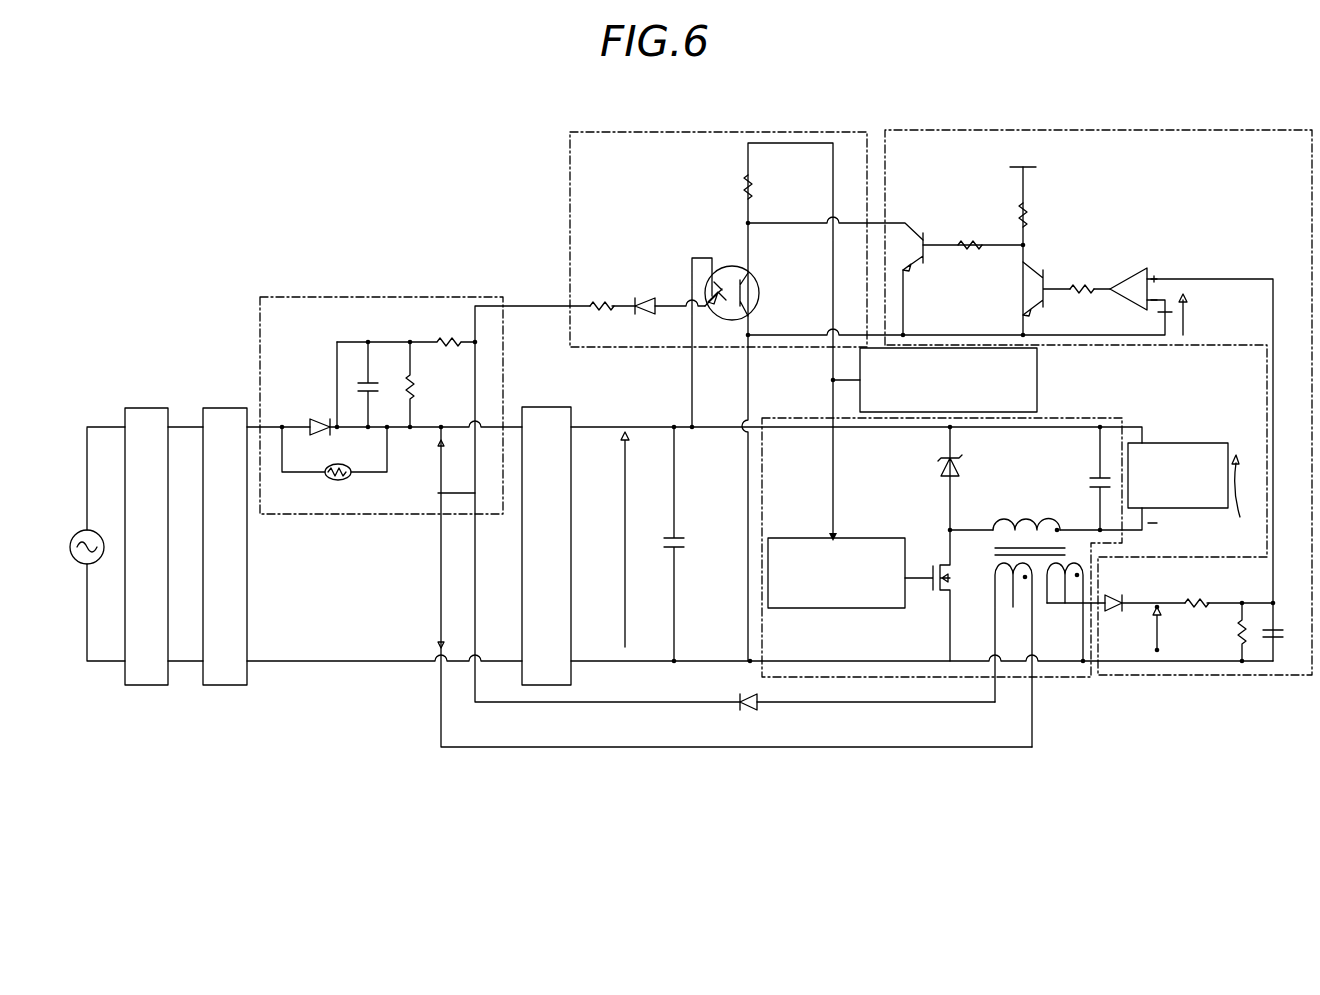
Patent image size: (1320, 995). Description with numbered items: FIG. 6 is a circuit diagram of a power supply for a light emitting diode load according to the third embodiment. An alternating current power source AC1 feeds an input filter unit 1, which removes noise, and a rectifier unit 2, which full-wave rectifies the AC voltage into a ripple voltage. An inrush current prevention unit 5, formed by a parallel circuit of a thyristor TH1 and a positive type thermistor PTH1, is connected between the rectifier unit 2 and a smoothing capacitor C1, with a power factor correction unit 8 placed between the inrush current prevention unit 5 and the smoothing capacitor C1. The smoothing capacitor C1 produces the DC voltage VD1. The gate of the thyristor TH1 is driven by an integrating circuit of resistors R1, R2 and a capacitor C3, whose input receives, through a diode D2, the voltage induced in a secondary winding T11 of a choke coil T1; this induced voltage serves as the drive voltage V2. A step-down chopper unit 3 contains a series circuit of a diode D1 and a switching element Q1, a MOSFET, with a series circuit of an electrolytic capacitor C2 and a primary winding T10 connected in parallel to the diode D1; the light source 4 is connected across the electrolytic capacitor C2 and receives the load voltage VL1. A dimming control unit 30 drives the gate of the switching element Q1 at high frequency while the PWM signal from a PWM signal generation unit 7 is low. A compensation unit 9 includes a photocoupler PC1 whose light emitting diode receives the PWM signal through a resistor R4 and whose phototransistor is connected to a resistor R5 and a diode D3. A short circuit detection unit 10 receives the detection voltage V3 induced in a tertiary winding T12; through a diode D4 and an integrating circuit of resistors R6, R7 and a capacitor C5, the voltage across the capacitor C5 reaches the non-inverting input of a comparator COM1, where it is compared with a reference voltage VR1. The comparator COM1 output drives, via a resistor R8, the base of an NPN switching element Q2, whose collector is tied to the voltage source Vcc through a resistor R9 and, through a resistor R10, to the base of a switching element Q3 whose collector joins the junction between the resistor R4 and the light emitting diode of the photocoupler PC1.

The input filter unit 1 is at (146, 406).
The rectifier unit 2 is at (225, 406).
The step-down chopper unit 3 is at (1085, 418).
The light source 4 is at (1229, 447).
The inrush current prevention unit 5 is at (447, 297).
The PWM signal generation unit 7 is at (1040, 364).
The power factor correction (PFC) unit 8 is at (546, 405).
The compensation unit 9 is at (826, 131).
The short circuit detection unit 10 is at (1120, 128).
The dimming control unit 30 is at (797, 535).
The alternating current power source AC1 is at (80, 533).
The thyristor TH1 is at (312, 388).
The positive type thermistor PTH1 is at (334, 465).
The resistor R1 is at (406, 331).
The capacitor C3 is at (379, 384).
The resistor R2 is at (423, 384).
The drive voltage V2 is at (456, 544).
The direct current (DC) voltage VD1 is at (606, 539).
The smoothing capacitor C1 is at (684, 544).
The resistor R5 is at (601, 295).
The diode D3 is at (644, 295).
The photocoupler PC1 is at (727, 275).
The resistor R4 is at (762, 187).
The switching element Q3 is at (922, 238).
The resistor R10 is at (968, 260).
The voltage source Vcc is at (1023, 153).
The resistor R9 is at (1037, 215).
The switching element Q2 is at (1066, 283).
The resistor R8 is at (1083, 300).
The comparator COM1 is at (1132, 278).
The reference voltage VR1 is at (1200, 314).
The diode D1 is at (934, 478).
The choke coil T1 is at (1000, 519).
The primary winding T10 is at (1026, 513).
The electrolytic capacitor C2 is at (1083, 478).
The switching element Q1 is at (943, 595).
The secondary winding T11 is at (1023, 577).
The tertiary winding T12 is at (1072, 590).
The diode D4 is at (1118, 593).
The detection voltage V3 is at (1143, 628).
The resistor R6 is at (1196, 591).
The resistor R7 is at (1229, 632).
The capacitor C5 is at (1285, 632).
The load voltage VL1 is at (1239, 499).
The diode D2 is at (745, 716).